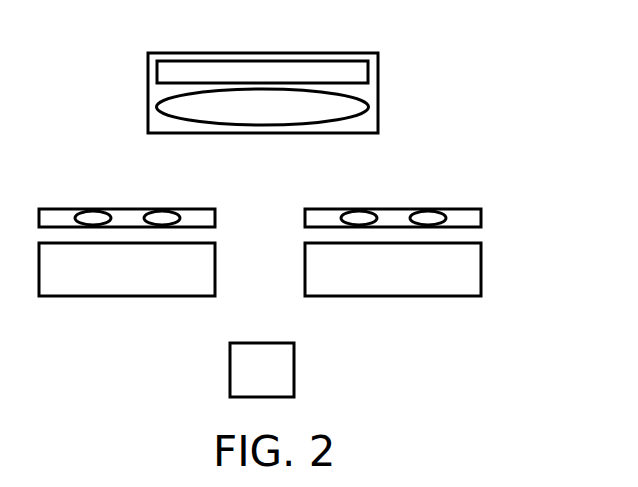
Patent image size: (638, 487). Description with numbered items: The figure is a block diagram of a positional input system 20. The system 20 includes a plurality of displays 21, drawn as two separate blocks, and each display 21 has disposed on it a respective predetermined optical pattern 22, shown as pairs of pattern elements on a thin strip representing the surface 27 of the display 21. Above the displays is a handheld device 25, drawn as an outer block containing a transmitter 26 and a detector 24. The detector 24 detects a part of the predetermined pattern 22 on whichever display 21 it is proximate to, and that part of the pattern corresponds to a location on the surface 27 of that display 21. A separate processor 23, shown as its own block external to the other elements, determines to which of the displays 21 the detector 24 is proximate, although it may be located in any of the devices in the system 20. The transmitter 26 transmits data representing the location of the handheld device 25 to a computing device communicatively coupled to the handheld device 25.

The positional input system 20 is at (282, 76).
The display 21 is at (217, 278).
The predetermined optical pattern 22 is at (97, 217).
The processor 23 is at (294, 372).
The detector 24 is at (378, 107).
The handheld device 25 is at (157, 107).
The transmitter 26 is at (297, 62).
The surface 27 is at (215, 242).